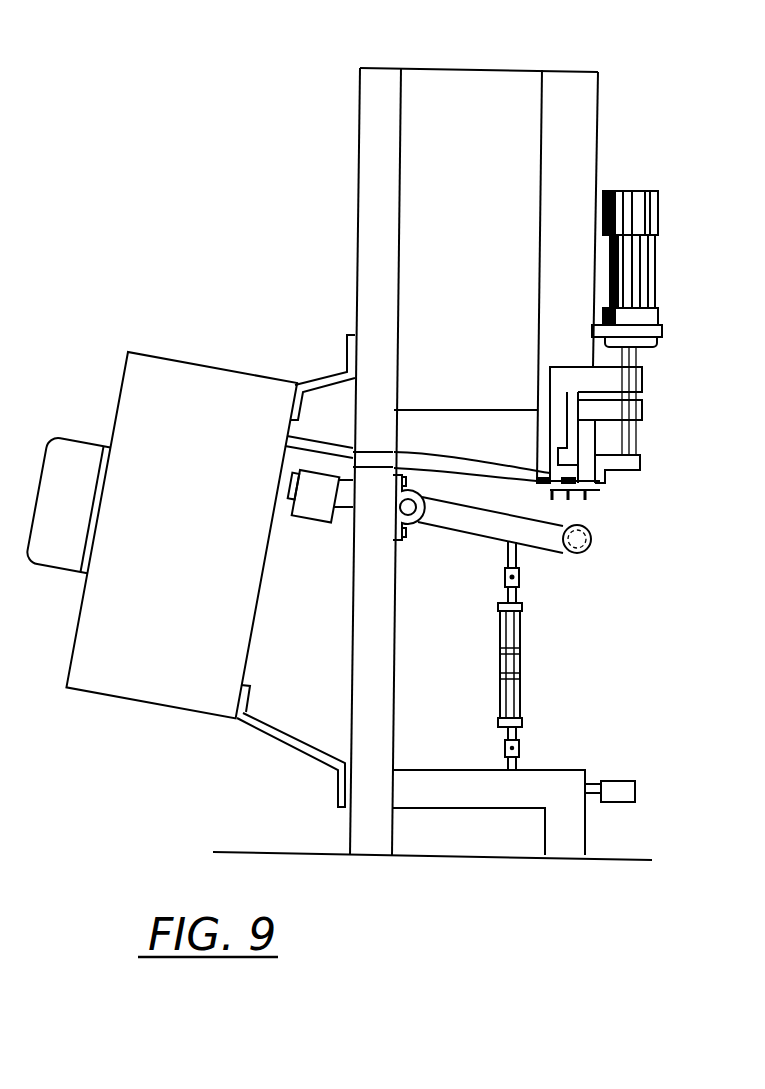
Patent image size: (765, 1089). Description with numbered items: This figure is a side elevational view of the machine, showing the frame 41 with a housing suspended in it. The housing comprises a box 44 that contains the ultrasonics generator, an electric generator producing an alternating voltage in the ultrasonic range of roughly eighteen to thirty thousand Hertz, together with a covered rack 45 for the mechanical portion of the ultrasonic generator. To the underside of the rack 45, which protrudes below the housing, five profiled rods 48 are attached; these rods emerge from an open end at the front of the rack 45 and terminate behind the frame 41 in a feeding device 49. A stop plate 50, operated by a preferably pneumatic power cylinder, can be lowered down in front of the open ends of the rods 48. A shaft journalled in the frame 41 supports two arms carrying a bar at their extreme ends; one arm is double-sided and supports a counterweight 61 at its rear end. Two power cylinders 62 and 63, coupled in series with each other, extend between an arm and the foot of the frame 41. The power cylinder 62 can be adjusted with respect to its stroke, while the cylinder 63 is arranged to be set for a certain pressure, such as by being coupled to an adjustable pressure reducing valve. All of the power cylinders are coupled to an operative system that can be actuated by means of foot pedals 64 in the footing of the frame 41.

The frame 41 is at (352, 143).
The box 44 is at (447, 133).
The covered rack 45 is at (568, 127).
The profiled rods 48 is at (523, 477).
The feeding device 49 is at (187, 433).
The stop plate 50 is at (625, 462).
The counterweight 61 is at (318, 495).
The power cylinder 62 is at (523, 620).
The power cylinder 63 is at (510, 700).
The foot pedals 64 is at (623, 788).